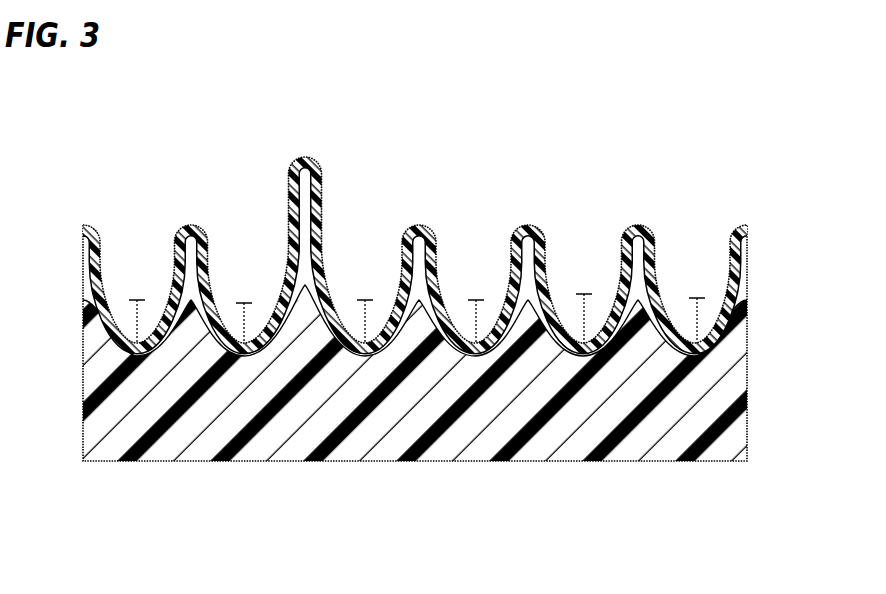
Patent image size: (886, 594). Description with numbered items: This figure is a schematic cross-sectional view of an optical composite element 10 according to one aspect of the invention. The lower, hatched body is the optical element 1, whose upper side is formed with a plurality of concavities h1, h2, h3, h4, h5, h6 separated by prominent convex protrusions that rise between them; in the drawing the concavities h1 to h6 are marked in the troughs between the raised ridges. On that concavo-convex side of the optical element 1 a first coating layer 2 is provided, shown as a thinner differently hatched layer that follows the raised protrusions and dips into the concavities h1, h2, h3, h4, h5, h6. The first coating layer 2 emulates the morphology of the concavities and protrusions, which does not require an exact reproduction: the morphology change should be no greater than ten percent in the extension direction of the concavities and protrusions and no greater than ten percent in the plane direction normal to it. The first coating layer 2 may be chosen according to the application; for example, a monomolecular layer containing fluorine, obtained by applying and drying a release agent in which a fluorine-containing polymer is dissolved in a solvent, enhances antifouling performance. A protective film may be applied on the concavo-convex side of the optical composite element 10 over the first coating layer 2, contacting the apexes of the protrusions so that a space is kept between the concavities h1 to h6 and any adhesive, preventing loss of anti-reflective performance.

The optical composite element 10 is at (461, 309).
The optical element 1 is at (749, 405).
The first coating layer 2 is at (647, 227).
The concavity h1 is at (137, 343).
The concavity h2 is at (244, 343).
The concavity h3 is at (365, 343).
The concavity h4 is at (476, 343).
The concavity h5 is at (584, 343).
The concavity h6 is at (697, 343).